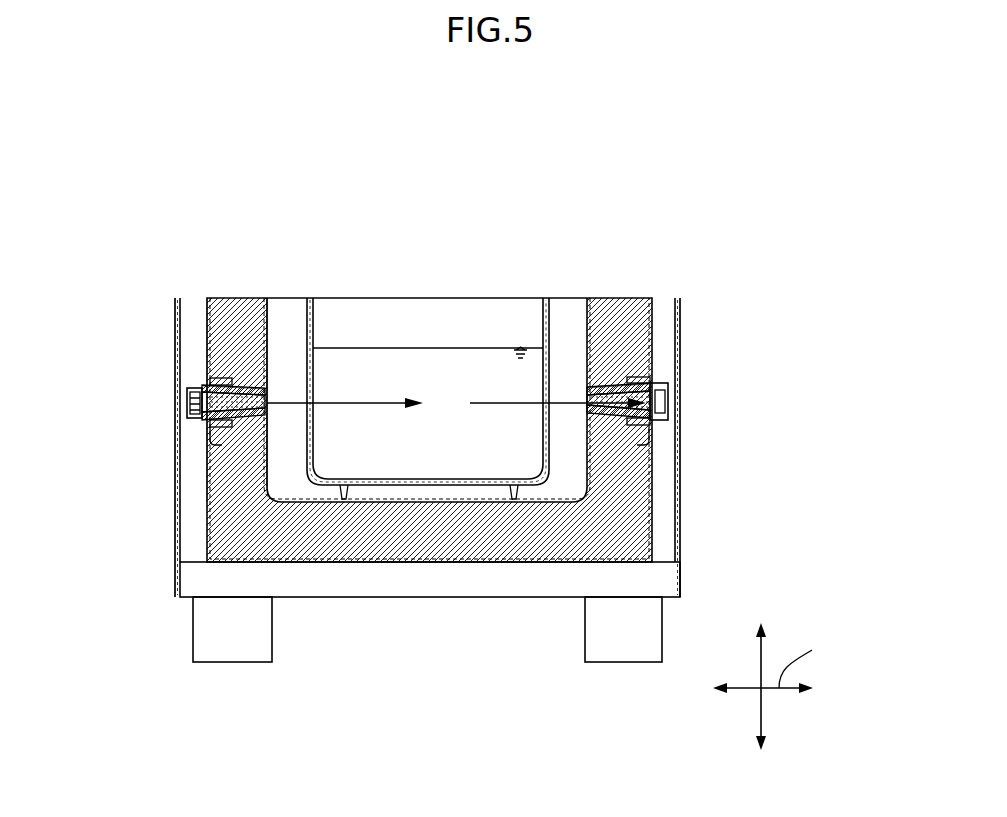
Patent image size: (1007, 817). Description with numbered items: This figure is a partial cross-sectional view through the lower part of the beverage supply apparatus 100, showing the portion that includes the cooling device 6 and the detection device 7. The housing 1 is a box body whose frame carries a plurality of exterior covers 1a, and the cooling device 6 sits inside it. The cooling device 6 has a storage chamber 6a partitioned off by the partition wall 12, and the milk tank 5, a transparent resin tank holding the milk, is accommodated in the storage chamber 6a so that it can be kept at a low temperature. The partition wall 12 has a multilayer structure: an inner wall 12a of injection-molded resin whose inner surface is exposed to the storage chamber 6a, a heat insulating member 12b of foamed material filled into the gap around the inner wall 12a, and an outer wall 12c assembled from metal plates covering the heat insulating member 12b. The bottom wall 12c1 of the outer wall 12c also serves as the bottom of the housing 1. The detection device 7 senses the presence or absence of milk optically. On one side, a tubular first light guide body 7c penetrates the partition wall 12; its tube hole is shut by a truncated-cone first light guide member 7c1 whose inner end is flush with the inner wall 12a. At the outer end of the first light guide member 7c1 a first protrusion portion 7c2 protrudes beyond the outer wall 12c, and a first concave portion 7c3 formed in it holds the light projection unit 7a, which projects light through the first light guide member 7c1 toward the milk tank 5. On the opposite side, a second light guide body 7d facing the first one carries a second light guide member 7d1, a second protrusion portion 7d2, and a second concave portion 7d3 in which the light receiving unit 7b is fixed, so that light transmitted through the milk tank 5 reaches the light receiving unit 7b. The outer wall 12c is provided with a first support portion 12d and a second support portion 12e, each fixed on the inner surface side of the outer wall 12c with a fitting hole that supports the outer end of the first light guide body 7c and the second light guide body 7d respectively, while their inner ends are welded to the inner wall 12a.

The beverage supply apparatus 100 is at (142, 198).
The housing 1 is at (426, 480).
The exterior cover 1a is at (175, 535).
The milk tank 5 is at (548, 300).
The cooling device 6 is at (664, 295).
The storage chamber 6a is at (277, 361).
The detection device 7 is at (104, 302).
The light projection unit 7a is at (190, 404).
The light receiving unit 7b is at (668, 404).
The first light guide body 7c is at (262, 388).
The first light guide member 7c1 is at (247, 388).
The first protrusion portion 7c2 is at (200, 381).
The first concave portion 7c3 is at (204, 397).
The second light guide body 7d is at (600, 387).
The second light guide member 7d1 is at (612, 387).
The second protrusion portion 7d2 is at (667, 383).
The second concave portion 7d3 is at (668, 400).
The partition wall 12 is at (431, 453).
The inner wall 12a is at (267, 299).
The heat insulating member 12b is at (238, 323).
The outer wall 12c is at (177, 300).
The bottom wall 12c1 is at (372, 562).
The first support portion 12d is at (208, 432).
The second support portion 12e is at (652, 434).